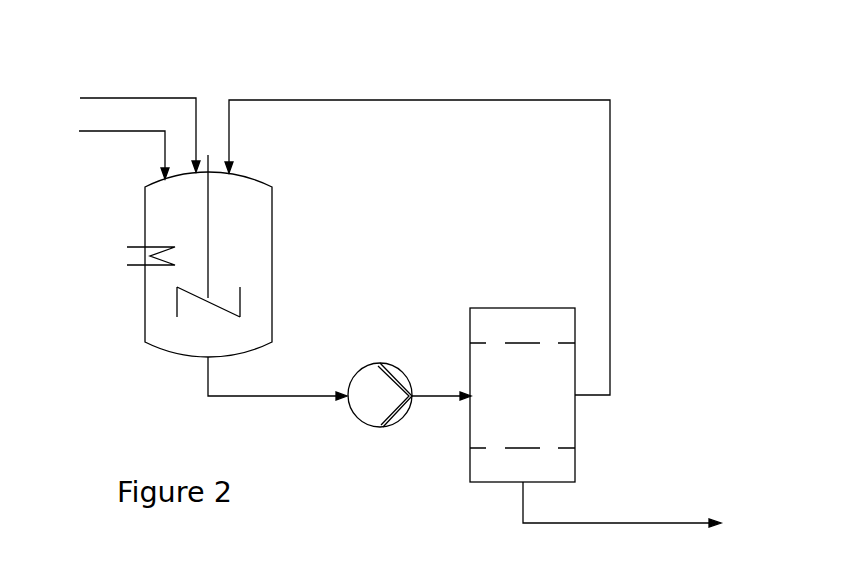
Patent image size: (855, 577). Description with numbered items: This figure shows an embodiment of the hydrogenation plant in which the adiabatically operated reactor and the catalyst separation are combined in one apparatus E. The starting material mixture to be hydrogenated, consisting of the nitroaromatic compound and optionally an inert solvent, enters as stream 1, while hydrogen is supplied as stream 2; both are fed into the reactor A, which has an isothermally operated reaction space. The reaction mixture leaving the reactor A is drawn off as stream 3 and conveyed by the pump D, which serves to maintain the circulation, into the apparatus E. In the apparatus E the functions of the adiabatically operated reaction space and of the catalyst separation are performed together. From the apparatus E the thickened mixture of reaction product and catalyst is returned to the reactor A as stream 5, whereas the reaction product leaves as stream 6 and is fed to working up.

The starting material mixture stream 1 is at (110, 151).
The hydrogen stream 2 is at (123, 128).
The reaction mixture stream 3 is at (277, 378).
The thickened mixture stream 5 is at (417, 230).
The reaction product stream 6 is at (638, 515).
The reactor with isothermally operated reaction space A is at (199, 256).
The pump D is at (380, 395).
The combined apparatus E is at (522, 395).